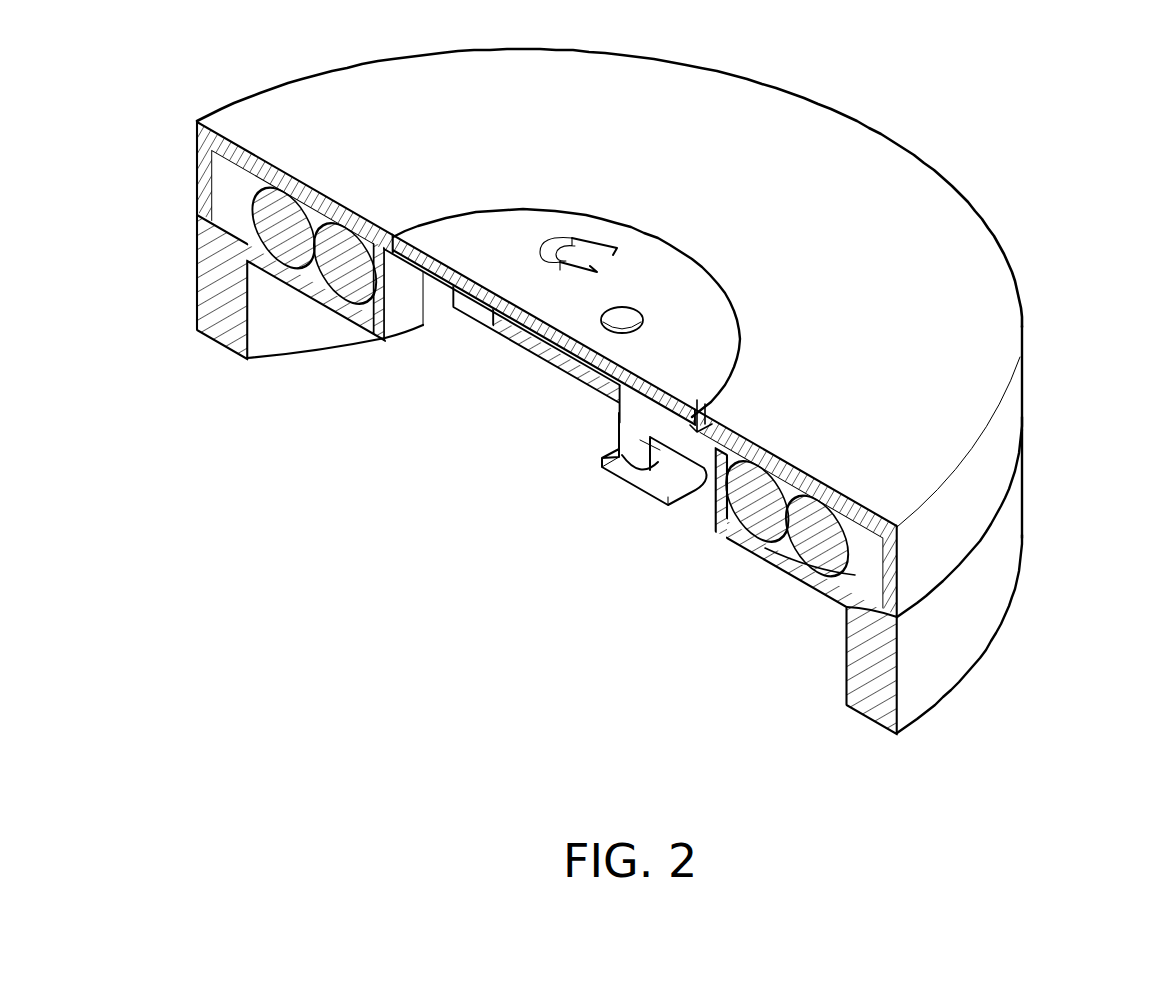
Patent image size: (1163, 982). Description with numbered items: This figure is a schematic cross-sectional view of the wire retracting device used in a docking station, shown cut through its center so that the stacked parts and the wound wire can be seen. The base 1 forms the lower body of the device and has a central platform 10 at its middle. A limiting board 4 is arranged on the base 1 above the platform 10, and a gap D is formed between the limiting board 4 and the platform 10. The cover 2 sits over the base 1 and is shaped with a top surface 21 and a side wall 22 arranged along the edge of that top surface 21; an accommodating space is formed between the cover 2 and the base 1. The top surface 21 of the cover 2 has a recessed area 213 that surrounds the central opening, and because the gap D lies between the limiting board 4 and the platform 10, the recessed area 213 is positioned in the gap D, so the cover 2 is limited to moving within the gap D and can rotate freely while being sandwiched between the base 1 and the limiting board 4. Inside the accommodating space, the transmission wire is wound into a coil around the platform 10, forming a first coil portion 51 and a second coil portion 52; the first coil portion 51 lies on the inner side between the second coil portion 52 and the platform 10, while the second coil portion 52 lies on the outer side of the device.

The base 1 is at (1010, 532).
The cover 2 is at (1100, 258).
The top surface 21 is at (995, 290).
The side wall 22 is at (1015, 407).
The recessed area 213 is at (692, 425).
The limiting board 4 is at (683, 268).
The platform 10 is at (718, 500).
The first coil portion 51 is at (353, 292).
The second coil portion 52 is at (290, 238).
The gap D is at (657, 414).